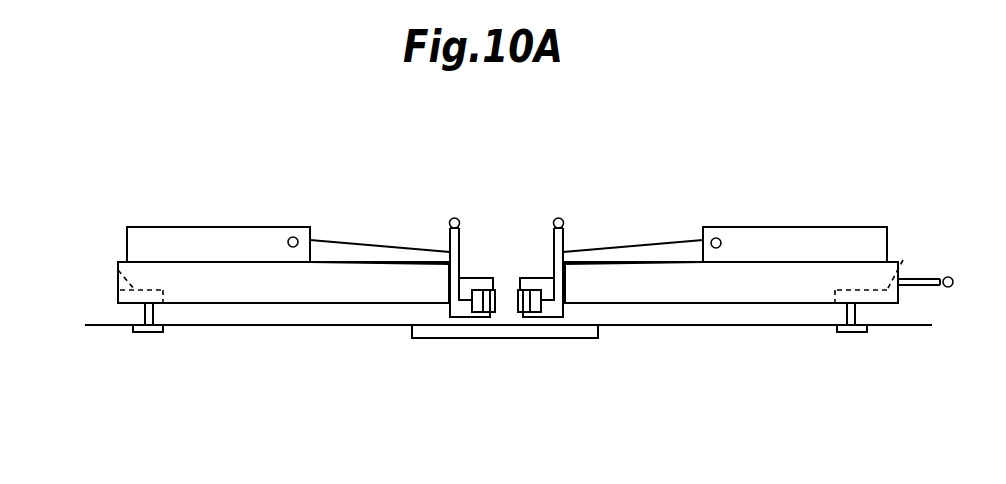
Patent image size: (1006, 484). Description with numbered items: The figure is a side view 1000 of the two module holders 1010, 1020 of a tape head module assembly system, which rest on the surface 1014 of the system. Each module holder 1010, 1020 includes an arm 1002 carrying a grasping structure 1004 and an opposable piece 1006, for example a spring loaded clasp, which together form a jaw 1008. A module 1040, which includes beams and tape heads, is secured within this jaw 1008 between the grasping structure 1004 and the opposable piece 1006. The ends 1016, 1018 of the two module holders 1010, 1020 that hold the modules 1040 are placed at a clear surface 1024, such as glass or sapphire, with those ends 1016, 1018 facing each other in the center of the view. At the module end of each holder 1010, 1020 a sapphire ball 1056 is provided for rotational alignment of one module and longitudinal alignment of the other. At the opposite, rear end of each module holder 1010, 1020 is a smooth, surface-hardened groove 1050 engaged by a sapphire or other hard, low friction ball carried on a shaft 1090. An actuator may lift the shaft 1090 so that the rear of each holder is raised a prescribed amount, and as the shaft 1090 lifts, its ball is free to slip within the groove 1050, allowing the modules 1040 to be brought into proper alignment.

The side view 1000 is at (603, 124).
The arm 1002 is at (742, 282).
The grasping structure 1004 is at (537, 262).
The opposable piece 1006 is at (692, 242).
The jaw 1008 is at (477, 312).
The module holder 1010 is at (293, 303).
The surface 1014 is at (383, 327).
The end 1016 is at (568, 205).
The end 1018 is at (453, 207).
The module holder 1020 is at (652, 302).
The clear surface 1024 is at (505, 338).
The module 1040 is at (521, 290).
The groove 1050 is at (118, 270).
The sapphire ball 1056 is at (450, 222).
The shaft 1090 is at (143, 315).